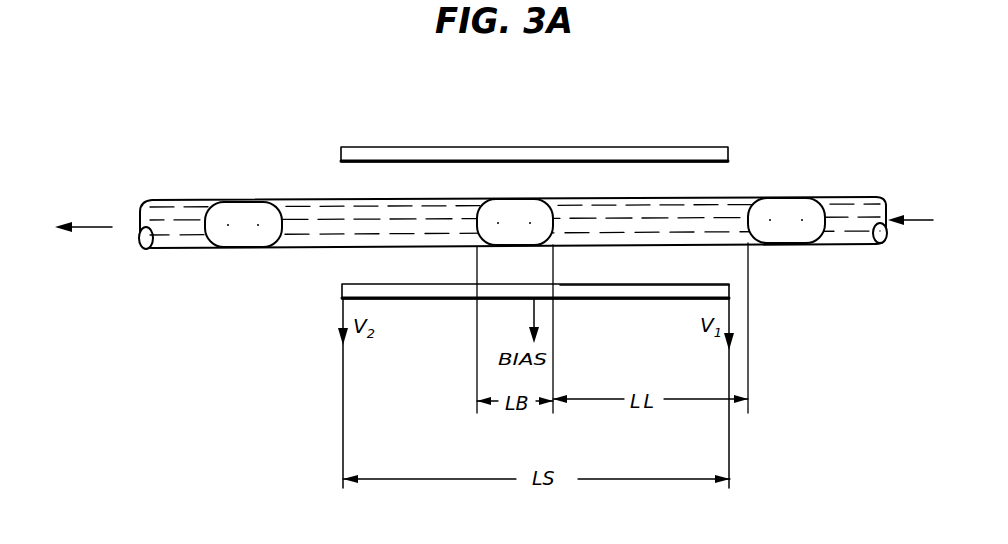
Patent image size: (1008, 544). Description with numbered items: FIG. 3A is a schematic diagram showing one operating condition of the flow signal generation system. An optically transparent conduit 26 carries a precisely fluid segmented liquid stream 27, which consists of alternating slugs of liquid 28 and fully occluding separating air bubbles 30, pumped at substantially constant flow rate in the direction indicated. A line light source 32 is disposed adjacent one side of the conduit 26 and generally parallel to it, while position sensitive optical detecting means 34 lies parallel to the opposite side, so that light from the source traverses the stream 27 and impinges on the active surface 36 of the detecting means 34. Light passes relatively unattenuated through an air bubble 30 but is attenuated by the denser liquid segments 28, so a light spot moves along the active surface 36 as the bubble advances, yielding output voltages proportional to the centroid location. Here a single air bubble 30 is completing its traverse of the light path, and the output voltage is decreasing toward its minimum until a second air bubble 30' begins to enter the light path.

The optically transparent conduit 26 is at (748, 200).
The fluid segmented liquid stream 27 is at (337, 233).
The slugs of liquid 28 is at (685, 205).
The air bubble 30 is at (515, 238).
The second air bubble 30' is at (840, 248).
The line light source 32 is at (514, 142).
The position sensitive optical detecting means 34 is at (596, 308).
The active surface 36 is at (630, 284).